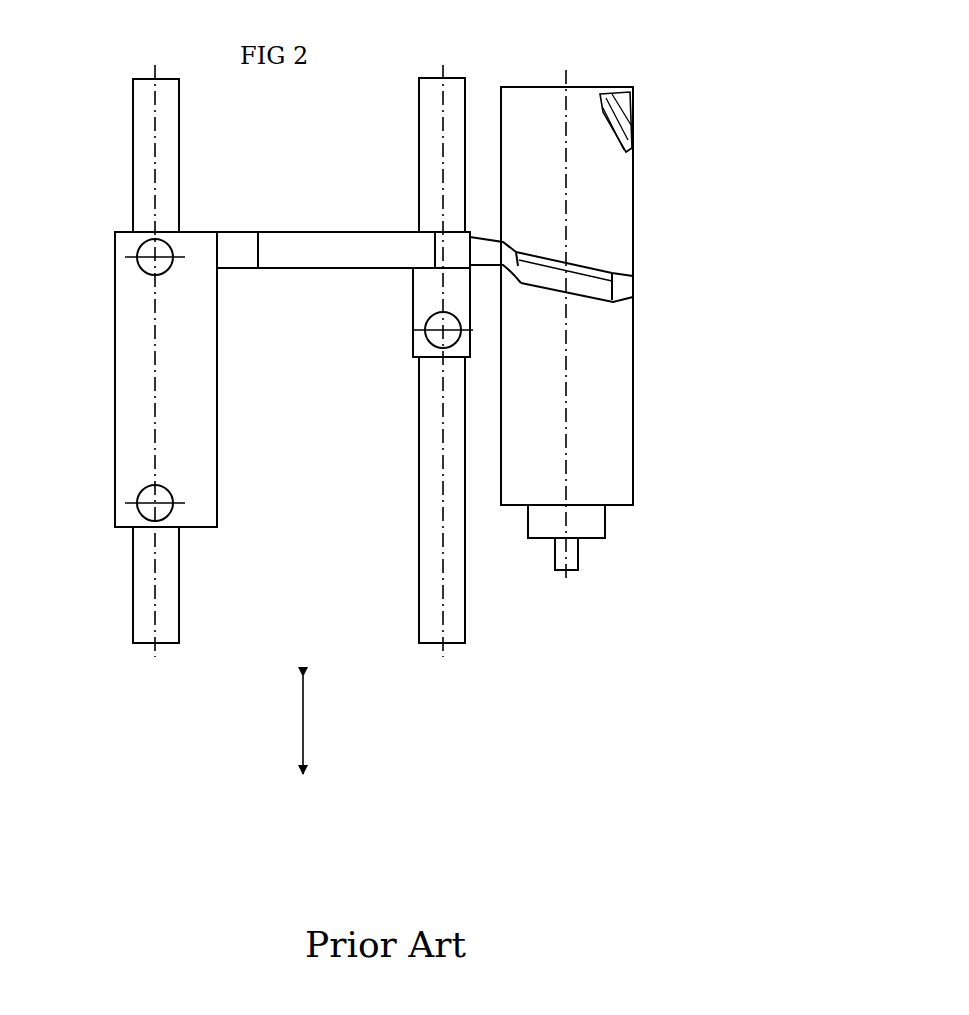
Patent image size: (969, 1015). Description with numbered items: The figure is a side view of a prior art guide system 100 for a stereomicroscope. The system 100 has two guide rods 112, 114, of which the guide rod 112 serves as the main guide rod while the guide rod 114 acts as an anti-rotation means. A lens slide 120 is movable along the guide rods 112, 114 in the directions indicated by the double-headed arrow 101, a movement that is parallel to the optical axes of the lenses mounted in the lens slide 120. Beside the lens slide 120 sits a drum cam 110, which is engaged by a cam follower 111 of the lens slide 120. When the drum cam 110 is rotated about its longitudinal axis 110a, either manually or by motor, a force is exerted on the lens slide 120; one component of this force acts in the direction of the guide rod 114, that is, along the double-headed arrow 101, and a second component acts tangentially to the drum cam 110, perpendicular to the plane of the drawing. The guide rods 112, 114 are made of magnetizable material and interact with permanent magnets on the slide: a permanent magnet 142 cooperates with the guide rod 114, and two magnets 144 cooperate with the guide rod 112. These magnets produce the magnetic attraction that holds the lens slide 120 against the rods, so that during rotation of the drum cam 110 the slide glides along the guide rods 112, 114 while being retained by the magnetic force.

The guide system 100 is at (727, 112).
The drum cam 110 is at (592, 299).
The longitudinal axis 110a is at (570, 82).
The cam follower 111 is at (479, 264).
The guide rod 112 is at (170, 611).
The guide rod 114 is at (450, 605).
The lens slide 120 is at (182, 417).
The permanent magnet 142 is at (425, 322).
The magnets 144 is at (140, 258).
The double-headed arrow 101 is at (313, 742).